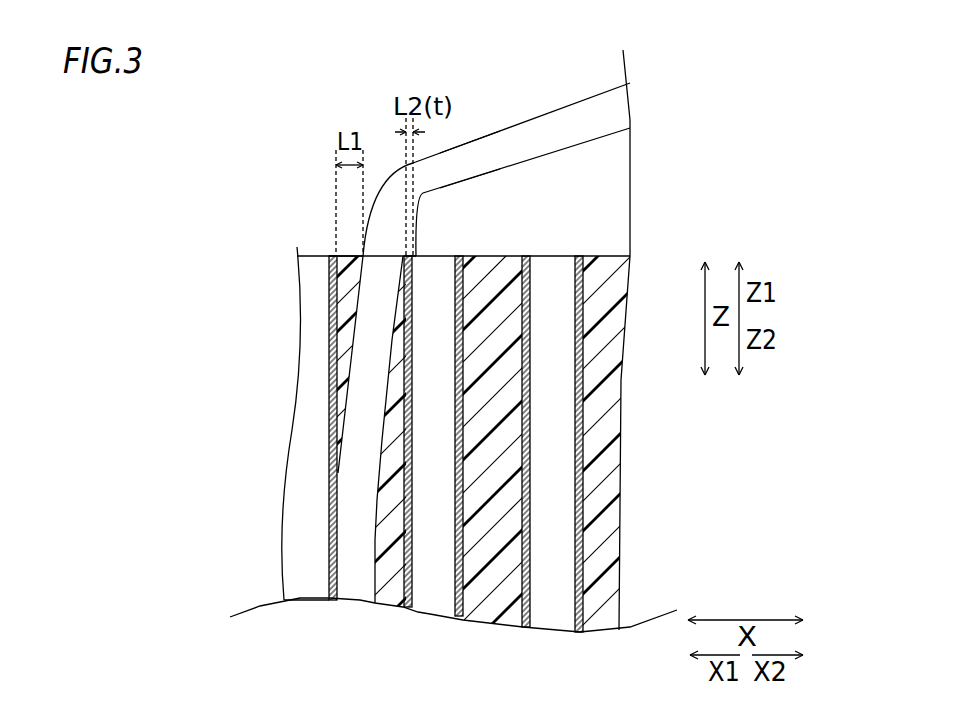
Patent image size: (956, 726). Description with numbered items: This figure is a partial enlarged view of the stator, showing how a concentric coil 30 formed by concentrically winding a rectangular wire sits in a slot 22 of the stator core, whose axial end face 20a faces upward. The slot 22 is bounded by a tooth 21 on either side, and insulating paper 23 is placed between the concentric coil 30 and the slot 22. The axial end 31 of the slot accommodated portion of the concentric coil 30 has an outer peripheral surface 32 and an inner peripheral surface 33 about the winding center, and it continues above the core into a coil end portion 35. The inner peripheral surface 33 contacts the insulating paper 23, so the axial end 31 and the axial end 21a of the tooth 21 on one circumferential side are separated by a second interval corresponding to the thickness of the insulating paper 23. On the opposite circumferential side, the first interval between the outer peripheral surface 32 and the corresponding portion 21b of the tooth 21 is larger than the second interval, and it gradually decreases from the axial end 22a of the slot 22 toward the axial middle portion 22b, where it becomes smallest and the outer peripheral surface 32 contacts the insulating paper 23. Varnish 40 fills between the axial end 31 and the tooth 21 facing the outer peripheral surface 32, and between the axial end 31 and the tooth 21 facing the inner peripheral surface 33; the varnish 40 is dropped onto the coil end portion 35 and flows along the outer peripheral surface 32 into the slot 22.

The axial end face 20a is at (560, 252).
The tooth 21 is at (439, 609).
The axial end 21a is at (330, 254).
The corresponding portion 21b is at (330, 280).
The slot 22 is at (337, 254).
The axial end of the slot 22a is at (350, 364).
The axial middle portion of the slot 22b is at (340, 562).
The insulating paper 23 is at (409, 610).
The concentric coil 30 is at (460, 151).
The axial end 31 is at (380, 252).
The outer peripheral surface 32 is at (480, 137).
The inner peripheral surface 33 is at (490, 177).
The coil end portion 35 is at (465, 160).
The varnish 40 is at (328, 318).